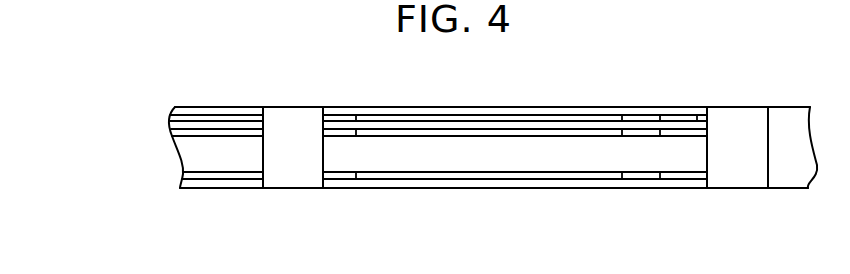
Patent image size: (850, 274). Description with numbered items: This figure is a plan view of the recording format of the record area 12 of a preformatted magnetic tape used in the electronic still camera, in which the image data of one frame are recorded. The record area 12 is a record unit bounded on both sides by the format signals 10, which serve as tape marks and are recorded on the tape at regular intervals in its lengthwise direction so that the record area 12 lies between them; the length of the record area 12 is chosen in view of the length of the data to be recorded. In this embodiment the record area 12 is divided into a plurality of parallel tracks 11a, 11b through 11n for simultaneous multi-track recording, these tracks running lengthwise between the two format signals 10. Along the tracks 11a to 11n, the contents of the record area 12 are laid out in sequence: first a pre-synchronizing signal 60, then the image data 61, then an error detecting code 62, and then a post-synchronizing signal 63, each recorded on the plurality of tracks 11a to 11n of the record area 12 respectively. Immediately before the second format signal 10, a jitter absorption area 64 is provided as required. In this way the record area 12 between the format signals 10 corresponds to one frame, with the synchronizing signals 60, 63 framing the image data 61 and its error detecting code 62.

The format signals 10 is at (322, 101).
The track 11a is at (171, 121).
The track 11b is at (171, 133).
The track 11n is at (182, 178).
The record area 12 is at (519, 142).
The pre-synchronizing signal 60 is at (343, 116).
The image data 61 is at (435, 116).
The error detecting code 62 is at (637, 116).
The post-synchronizing signal 63 is at (675, 116).
The jitter absorption area 64 is at (701, 88).